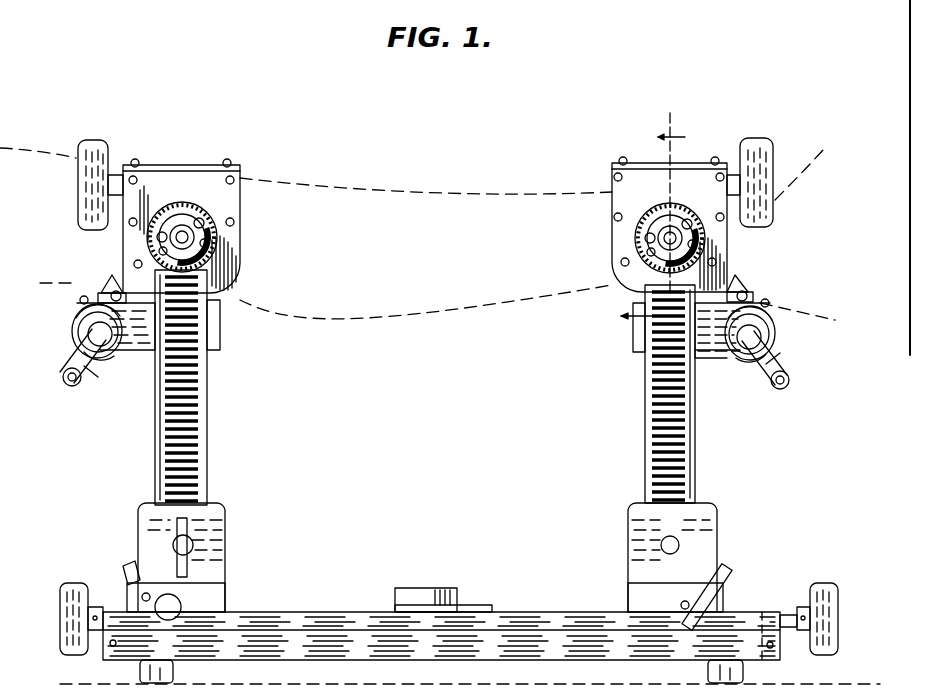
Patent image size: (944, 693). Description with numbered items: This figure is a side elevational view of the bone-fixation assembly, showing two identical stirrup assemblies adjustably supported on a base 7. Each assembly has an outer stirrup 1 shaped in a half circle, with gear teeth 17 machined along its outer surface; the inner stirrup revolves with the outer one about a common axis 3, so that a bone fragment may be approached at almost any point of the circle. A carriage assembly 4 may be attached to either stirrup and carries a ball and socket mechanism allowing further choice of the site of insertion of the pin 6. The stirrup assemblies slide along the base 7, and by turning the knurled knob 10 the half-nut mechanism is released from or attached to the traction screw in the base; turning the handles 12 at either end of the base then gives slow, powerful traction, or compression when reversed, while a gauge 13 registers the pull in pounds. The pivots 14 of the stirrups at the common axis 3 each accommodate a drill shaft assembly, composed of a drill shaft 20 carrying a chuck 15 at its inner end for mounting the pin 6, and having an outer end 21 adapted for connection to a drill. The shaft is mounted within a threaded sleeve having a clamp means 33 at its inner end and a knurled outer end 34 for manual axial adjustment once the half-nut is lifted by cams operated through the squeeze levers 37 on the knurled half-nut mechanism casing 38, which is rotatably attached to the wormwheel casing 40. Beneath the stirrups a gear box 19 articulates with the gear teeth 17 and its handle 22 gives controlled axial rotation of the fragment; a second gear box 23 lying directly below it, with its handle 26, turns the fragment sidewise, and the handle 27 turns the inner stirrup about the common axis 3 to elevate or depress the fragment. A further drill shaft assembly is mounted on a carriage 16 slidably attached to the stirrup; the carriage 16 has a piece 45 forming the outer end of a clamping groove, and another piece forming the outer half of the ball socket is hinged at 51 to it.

The outer stirrup 1 is at (155, 432).
The common axis 3 is at (196, 232).
The carriage assembly 4 is at (78, 318).
The pin 6 is at (644, 219).
The base 7 is at (487, 655).
The knurled knob 10 is at (165, 604).
The handles 12 is at (75, 585).
The gauge 13 is at (426, 588).
The pivots 14 is at (216, 242).
The chuck 15 is at (116, 282).
The carriage 16 is at (143, 345).
The gear teeth 17 is at (200, 386).
The gear box 19 is at (213, 557).
The drill shaft 20 is at (778, 363).
The outer end 21 is at (188, 233).
The handle 22 is at (185, 528).
The gear box 23 is at (215, 597).
The handle 26 is at (130, 566).
The handle 27 is at (92, 150).
The clamp means 33 is at (112, 300).
The outer end 34 is at (182, 225).
The squeeze levers 37 is at (166, 216).
The half-nut mechanism casing 38 is at (160, 243).
The wormwheel casing 40 is at (232, 188).
The piece 45 is at (220, 332).
The hinge 51 is at (82, 297).